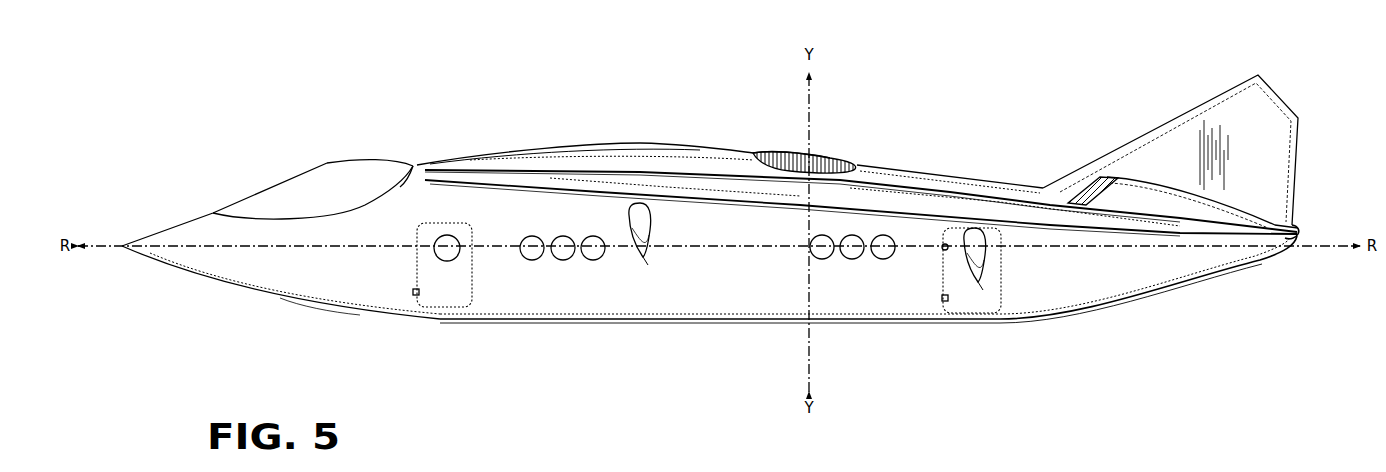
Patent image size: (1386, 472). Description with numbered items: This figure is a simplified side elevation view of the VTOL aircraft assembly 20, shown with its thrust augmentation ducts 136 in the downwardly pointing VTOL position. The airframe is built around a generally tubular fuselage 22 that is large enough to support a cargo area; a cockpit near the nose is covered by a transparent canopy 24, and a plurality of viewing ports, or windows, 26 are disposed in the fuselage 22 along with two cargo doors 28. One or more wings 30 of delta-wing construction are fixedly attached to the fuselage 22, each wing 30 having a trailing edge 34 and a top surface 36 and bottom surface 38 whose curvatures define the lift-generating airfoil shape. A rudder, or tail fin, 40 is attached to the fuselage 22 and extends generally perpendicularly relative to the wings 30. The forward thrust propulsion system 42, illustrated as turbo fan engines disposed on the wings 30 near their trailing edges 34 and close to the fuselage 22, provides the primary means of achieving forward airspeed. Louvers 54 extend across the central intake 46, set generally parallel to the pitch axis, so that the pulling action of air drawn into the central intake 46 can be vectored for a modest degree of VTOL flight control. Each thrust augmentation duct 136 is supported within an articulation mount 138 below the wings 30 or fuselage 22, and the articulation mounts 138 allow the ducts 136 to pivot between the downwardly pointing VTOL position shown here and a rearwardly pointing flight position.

The aircraft assembly 20 is at (480, 127).
The fuselage 22 is at (593, 323).
The canopy 24 is at (288, 180).
The viewing ports 26 is at (593, 262).
The cargo doors 28 is at (437, 300).
The wing 30 is at (684, 182).
The trailing edge 34 is at (1300, 233).
The top surface 36 is at (943, 192).
The bottom surface 38 is at (712, 207).
The tail fin 40 is at (1170, 150).
The forward thrust propulsion system 42 is at (1119, 172).
The central intake 46 is at (830, 158).
The louvers 54 is at (787, 157).
The thrust augmentation duct 136 is at (288, 305).
The articulation mount 138 is at (628, 207).